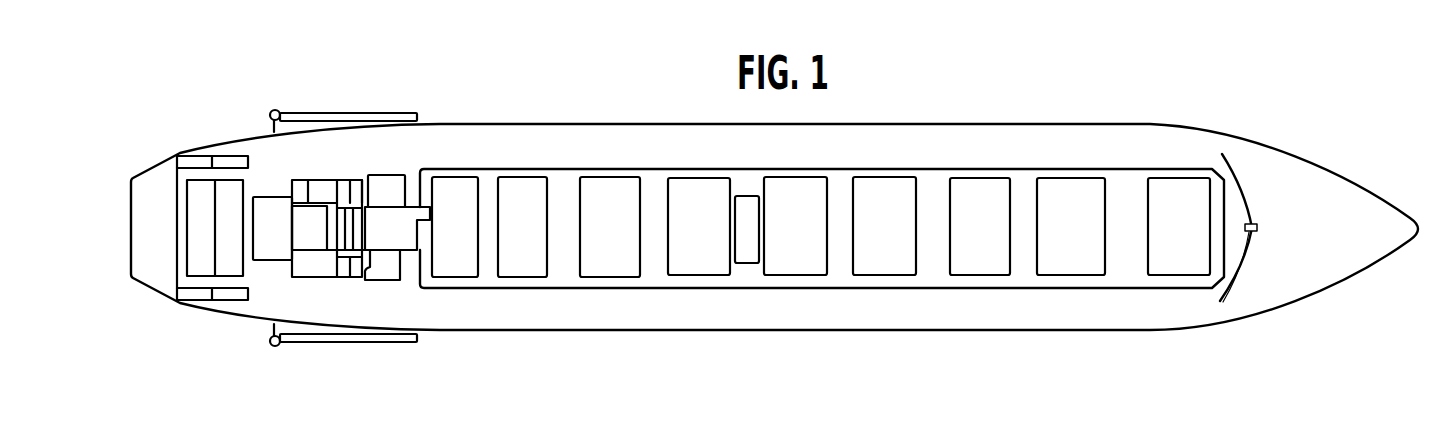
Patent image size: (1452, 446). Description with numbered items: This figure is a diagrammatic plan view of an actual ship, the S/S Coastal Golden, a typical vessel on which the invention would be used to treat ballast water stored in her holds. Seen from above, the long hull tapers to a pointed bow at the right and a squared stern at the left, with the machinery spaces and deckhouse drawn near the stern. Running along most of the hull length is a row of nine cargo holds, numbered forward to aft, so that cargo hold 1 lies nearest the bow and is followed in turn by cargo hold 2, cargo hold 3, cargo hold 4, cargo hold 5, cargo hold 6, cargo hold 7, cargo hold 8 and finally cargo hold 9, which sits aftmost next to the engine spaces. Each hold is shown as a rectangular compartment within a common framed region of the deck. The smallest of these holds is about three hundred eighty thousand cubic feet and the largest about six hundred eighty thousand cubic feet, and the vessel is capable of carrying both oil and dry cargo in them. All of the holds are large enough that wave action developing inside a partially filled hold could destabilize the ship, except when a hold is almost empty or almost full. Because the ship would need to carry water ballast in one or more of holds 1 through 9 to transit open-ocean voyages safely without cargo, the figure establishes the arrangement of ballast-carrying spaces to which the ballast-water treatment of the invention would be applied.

The cargo hold 1 is at (1185, 240).
The cargo hold 2 is at (1080, 240).
The cargo hold 3 is at (990, 240).
The cargo hold 4 is at (889, 240).
The cargo hold 5 is at (803, 240).
The cargo hold 6 is at (704, 240).
The cargo hold 7 is at (619, 240).
The cargo hold 8 is at (529, 240).
The cargo hold 9 is at (462, 240).